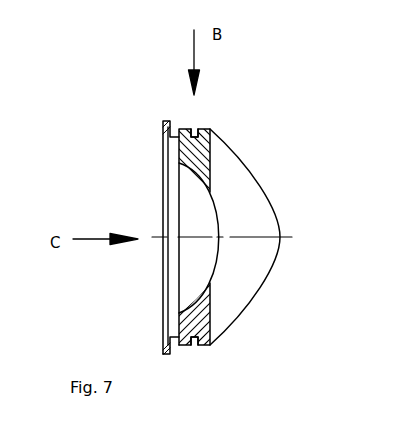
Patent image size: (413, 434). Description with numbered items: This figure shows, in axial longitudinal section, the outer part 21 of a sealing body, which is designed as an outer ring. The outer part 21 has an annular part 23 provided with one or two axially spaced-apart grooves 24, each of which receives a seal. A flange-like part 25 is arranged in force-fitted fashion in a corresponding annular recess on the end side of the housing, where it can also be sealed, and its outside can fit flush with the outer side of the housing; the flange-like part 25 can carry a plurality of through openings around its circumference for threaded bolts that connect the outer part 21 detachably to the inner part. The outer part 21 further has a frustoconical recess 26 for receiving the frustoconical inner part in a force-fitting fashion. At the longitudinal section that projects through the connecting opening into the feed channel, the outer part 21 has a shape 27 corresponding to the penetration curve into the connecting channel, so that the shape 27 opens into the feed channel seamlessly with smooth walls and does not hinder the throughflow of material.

The outer part 21 is at (207, 155).
The annular part 23 is at (187, 127).
The groove 24 is at (197, 339).
The flange-like part 25 is at (168, 122).
The frustoconical recess 26 is at (198, 265).
The shape 27 is at (242, 272).